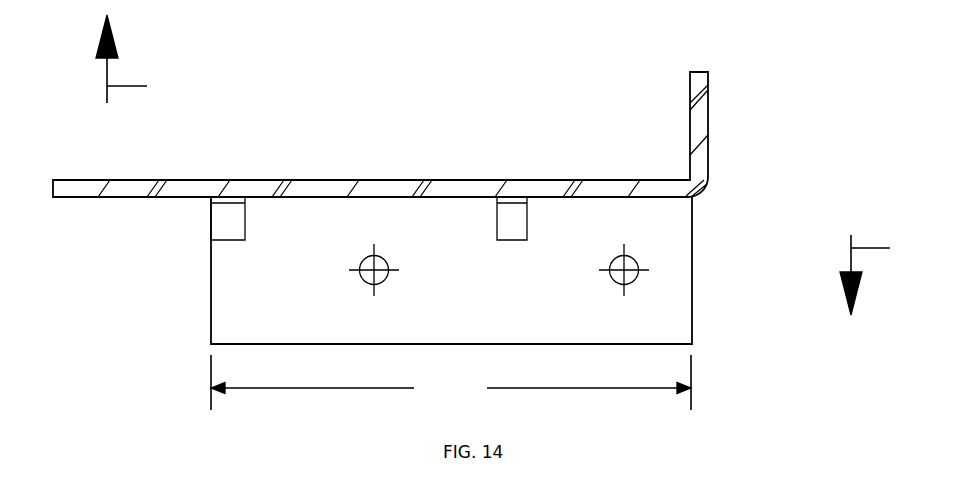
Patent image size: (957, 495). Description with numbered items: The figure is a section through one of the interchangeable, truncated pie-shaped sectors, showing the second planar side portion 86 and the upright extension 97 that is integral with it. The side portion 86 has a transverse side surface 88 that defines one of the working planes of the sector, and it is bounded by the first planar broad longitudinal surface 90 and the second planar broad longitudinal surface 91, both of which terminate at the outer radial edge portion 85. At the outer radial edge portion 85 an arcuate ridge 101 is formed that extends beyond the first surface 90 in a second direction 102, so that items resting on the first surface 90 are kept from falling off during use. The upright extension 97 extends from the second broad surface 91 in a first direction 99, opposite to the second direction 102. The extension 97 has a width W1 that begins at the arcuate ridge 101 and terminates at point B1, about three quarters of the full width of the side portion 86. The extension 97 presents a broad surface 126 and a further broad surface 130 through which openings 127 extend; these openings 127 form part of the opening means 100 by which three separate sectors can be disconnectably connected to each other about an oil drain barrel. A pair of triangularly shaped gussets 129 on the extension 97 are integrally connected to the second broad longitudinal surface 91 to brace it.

The second planar side portion 86 is at (449, 175).
The outer radial edge portion 85 is at (712, 148).
The side surface 88 is at (708, 98).
The ridge 101 is at (698, 126).
The point B' B1 is at (224, 160).
The first planar broad longitudinal surface 90 is at (586, 175).
The second planar broad longitudinal surface 91 is at (140, 205).
The first upright extension 97 is at (692, 244).
The broad surface 130 is at (660, 235).
The broad surface 126 is at (665, 305).
The triangularly shaped gussets 129 is at (245, 227).
The openings 127 is at (366, 282).
The opening means 100 is at (605, 276).
The second direction 102 is at (141, 59).
The first direction 99 is at (880, 275).
The width W1 is at (451, 382).